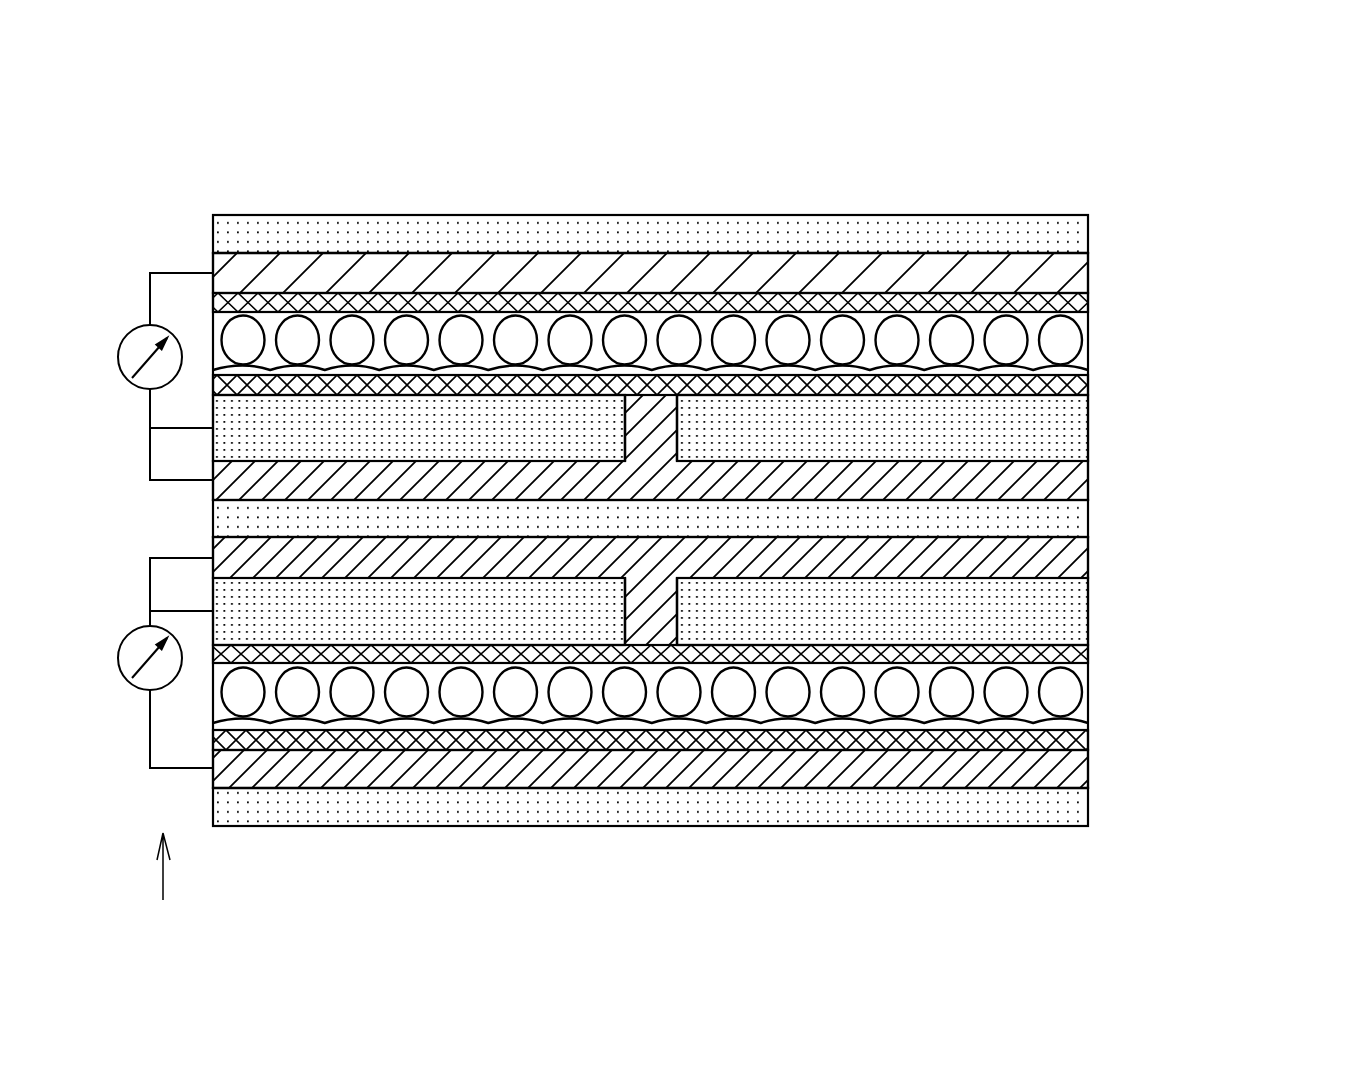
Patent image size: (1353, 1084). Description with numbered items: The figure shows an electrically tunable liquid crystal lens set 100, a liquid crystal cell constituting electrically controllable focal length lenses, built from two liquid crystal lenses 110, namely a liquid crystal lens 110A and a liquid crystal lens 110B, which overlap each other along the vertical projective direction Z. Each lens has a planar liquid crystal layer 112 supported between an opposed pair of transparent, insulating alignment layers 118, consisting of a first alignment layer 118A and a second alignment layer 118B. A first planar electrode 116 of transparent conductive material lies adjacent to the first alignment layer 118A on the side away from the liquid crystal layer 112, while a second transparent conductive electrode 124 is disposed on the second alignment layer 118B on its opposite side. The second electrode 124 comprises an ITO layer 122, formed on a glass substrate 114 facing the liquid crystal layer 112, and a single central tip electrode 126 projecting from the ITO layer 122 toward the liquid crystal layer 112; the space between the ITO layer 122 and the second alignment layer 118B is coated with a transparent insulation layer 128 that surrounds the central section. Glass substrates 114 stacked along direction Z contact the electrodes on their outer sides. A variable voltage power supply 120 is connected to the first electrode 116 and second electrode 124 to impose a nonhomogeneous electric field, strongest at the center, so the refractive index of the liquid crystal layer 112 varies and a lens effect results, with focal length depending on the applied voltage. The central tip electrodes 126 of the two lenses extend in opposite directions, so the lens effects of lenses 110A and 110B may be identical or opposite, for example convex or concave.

The electrically tunable liquid crystal lens set 100 is at (1058, 188).
The liquid crystal lens 110 is at (767, 516).
The liquid crystal lens 110A is at (1228, 792).
The liquid crystal lens 110B is at (1228, 500).
The planar liquid crystal layer 112 is at (1083, 343).
The glass substrate 114 is at (796, 236).
The first planar electrode 116 is at (1068, 279).
The alignment layer 118 is at (724, 521).
The first alignment layer 118A is at (1080, 301).
The second alignment layer 118B is at (1082, 385).
The variable voltage power supply 120 is at (127, 323).
The ITO layer 122 is at (685, 518).
The second transparent conductive electrode 124 is at (1068, 483).
The central tip electrode 126 is at (648, 432).
The insulation layer 128 is at (1068, 433).